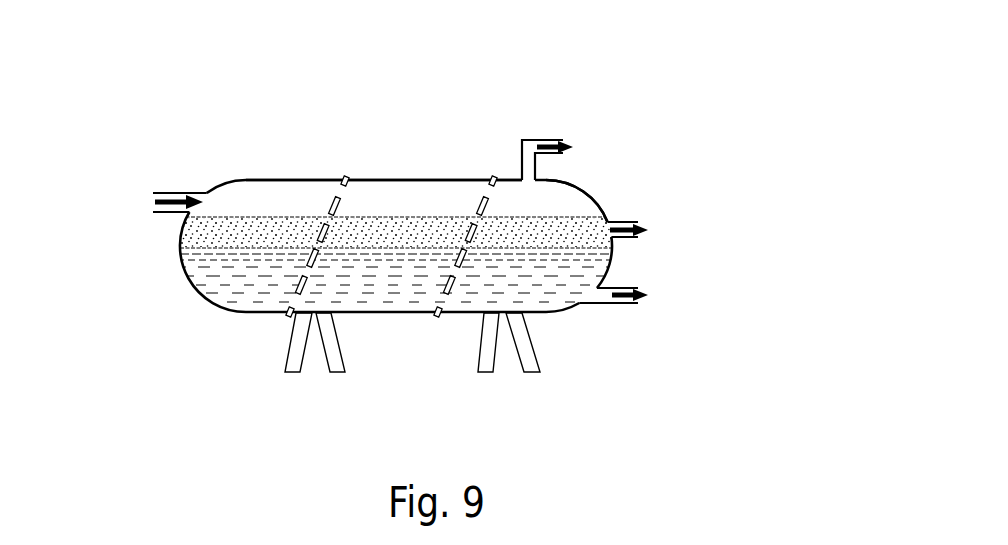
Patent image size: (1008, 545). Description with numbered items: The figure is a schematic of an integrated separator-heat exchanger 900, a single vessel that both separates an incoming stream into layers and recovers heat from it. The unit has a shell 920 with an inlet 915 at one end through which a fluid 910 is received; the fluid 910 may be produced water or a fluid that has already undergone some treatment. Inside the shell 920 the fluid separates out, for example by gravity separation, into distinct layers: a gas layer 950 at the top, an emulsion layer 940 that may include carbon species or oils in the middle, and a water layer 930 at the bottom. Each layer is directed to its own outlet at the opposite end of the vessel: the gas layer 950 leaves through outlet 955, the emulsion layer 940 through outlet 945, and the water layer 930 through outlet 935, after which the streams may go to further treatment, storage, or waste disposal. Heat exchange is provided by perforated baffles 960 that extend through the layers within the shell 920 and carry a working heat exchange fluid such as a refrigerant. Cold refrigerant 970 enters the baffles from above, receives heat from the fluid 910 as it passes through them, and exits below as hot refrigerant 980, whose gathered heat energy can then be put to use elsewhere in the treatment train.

The integrated separator-heat exchanger 900 is at (283, 89).
The fluid 910 is at (143, 196).
The inlet 915 is at (186, 192).
The shell 920 is at (300, 180).
The water layer 930 is at (588, 266).
The outlet 935 is at (624, 303).
The emulsion layer 940 is at (198, 231).
The outlet 945 is at (643, 203).
The gas layer 950 is at (570, 201).
The outlet 955 is at (540, 140).
The perforated baffles 960 is at (451, 292).
The cold refrigerant 970 is at (493, 177).
The hot refrigerant 980 is at (428, 316).